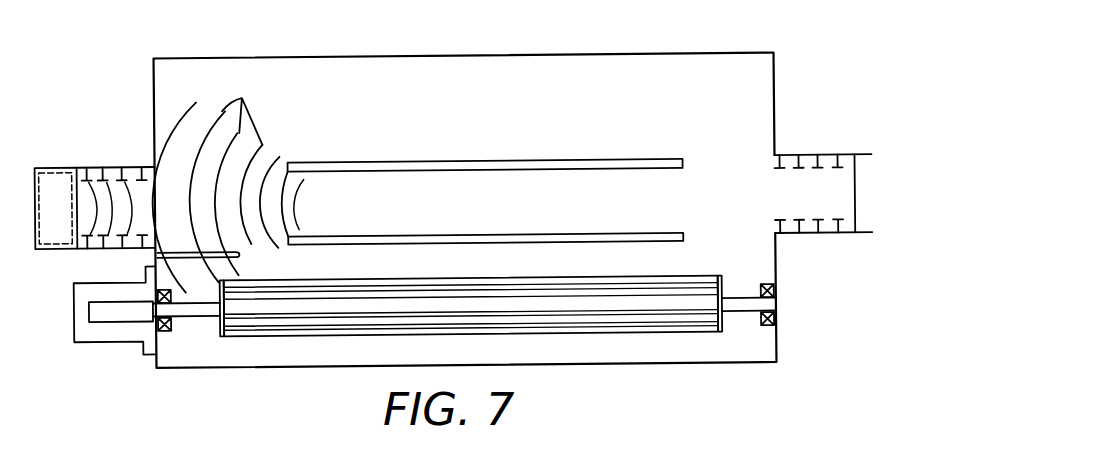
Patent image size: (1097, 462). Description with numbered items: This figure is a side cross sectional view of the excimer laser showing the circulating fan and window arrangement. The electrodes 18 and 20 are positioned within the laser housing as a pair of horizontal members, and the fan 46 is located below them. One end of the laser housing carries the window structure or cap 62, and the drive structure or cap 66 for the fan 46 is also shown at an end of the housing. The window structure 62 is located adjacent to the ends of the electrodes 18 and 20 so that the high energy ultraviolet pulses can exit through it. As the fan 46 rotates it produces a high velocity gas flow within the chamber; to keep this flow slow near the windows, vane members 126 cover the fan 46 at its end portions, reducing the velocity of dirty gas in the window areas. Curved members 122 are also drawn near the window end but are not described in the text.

The electrode 18 is at (523, 162).
The electrode 20 is at (470, 234).
The fan 46 is at (301, 320).
The window structure 62 is at (87, 164).
The drive structure 66 is at (124, 347).
The curved reflector members 122 is at (244, 91).
The vane members 126 is at (230, 250).